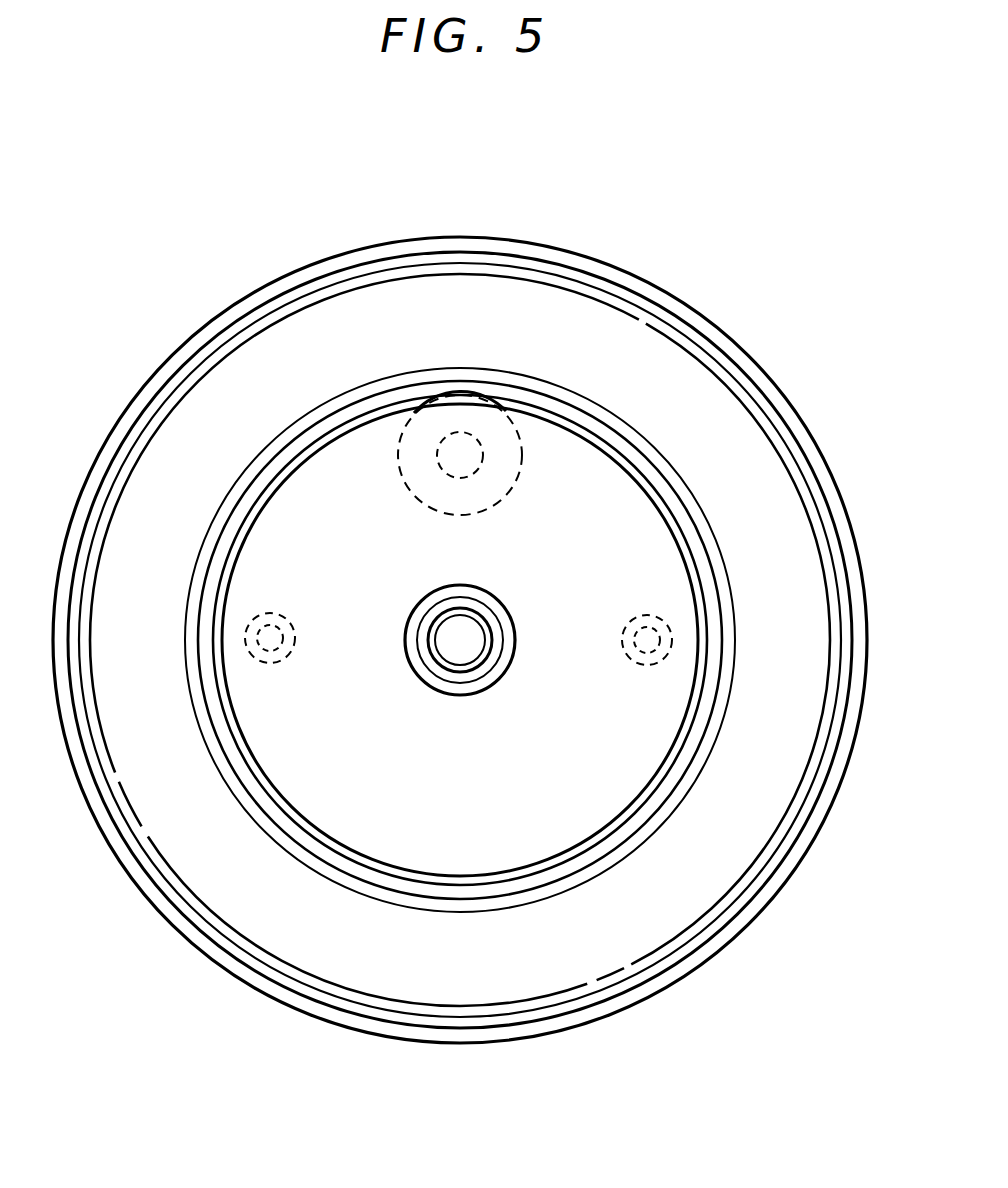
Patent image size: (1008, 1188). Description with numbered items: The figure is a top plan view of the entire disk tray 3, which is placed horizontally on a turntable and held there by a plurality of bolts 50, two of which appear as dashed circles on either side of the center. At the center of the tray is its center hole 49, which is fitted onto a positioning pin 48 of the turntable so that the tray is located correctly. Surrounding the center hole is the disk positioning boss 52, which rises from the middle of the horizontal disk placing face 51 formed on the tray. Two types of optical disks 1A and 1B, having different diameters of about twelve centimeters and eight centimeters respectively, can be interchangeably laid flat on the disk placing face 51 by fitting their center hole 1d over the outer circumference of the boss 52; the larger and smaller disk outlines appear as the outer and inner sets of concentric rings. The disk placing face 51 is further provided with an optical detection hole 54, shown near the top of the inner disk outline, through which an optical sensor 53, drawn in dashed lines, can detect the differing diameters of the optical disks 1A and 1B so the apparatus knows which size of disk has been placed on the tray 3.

The optical disk 1A is at (573, 285).
The optical disk 1B is at (312, 452).
The center hole 1d is at (416, 622).
The disk tray 3 is at (758, 362).
The positioning pin 48 is at (460, 653).
The center hole 49 is at (490, 640).
The bolts 50 is at (272, 645).
The disk placing face 51 is at (762, 463).
The disk positioning boss 52 is at (487, 606).
The optical sensor 53 is at (465, 455).
The optical detection hole 54 is at (462, 405).